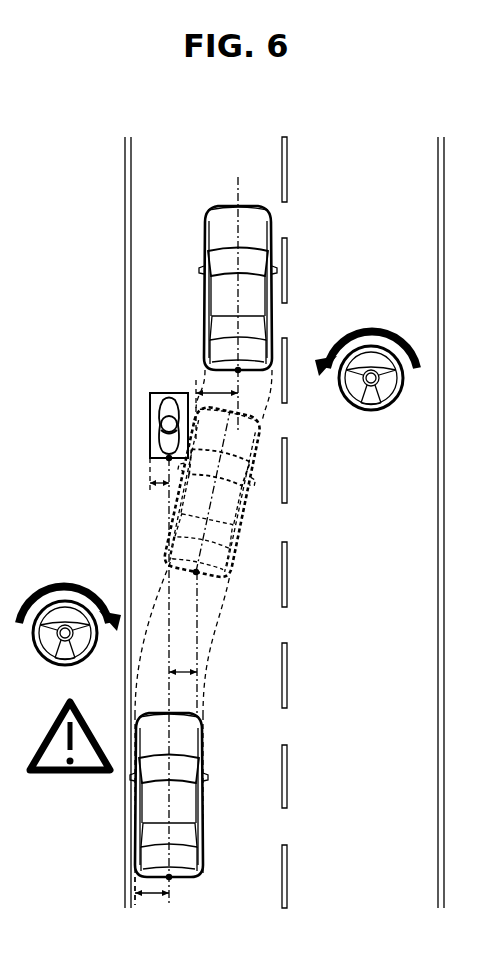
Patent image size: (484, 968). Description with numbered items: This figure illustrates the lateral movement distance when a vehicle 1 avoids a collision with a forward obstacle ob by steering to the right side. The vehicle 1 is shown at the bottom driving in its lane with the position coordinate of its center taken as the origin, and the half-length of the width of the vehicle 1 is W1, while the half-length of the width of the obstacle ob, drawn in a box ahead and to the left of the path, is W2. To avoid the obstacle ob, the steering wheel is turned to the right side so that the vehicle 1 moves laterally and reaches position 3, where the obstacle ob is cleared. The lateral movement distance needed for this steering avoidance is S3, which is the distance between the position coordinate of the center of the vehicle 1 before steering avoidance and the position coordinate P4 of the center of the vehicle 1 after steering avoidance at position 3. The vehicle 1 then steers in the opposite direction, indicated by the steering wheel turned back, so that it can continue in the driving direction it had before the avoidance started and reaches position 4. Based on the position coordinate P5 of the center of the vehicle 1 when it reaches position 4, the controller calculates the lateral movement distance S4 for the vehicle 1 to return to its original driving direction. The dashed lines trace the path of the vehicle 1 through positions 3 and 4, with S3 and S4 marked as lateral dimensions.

The vehicle 1 is at (145, 805).
The position ③ 3 is at (250, 452).
The position ④ 4 is at (205, 240).
The obstacle ob is at (160, 422).
The position coordinate of the center of the vehicle after steering avoidance P4 is at (196, 573).
The position coordinate of the center of the vehicle at position ④ P5 is at (238, 372).
The lateral movement distance S3 is at (183, 672).
The lateral movement distance S4 is at (205, 391).
The half-length of the width of the vehicle W1 is at (150, 895).
The half-length of the width of the obstacle W2 is at (159, 484).